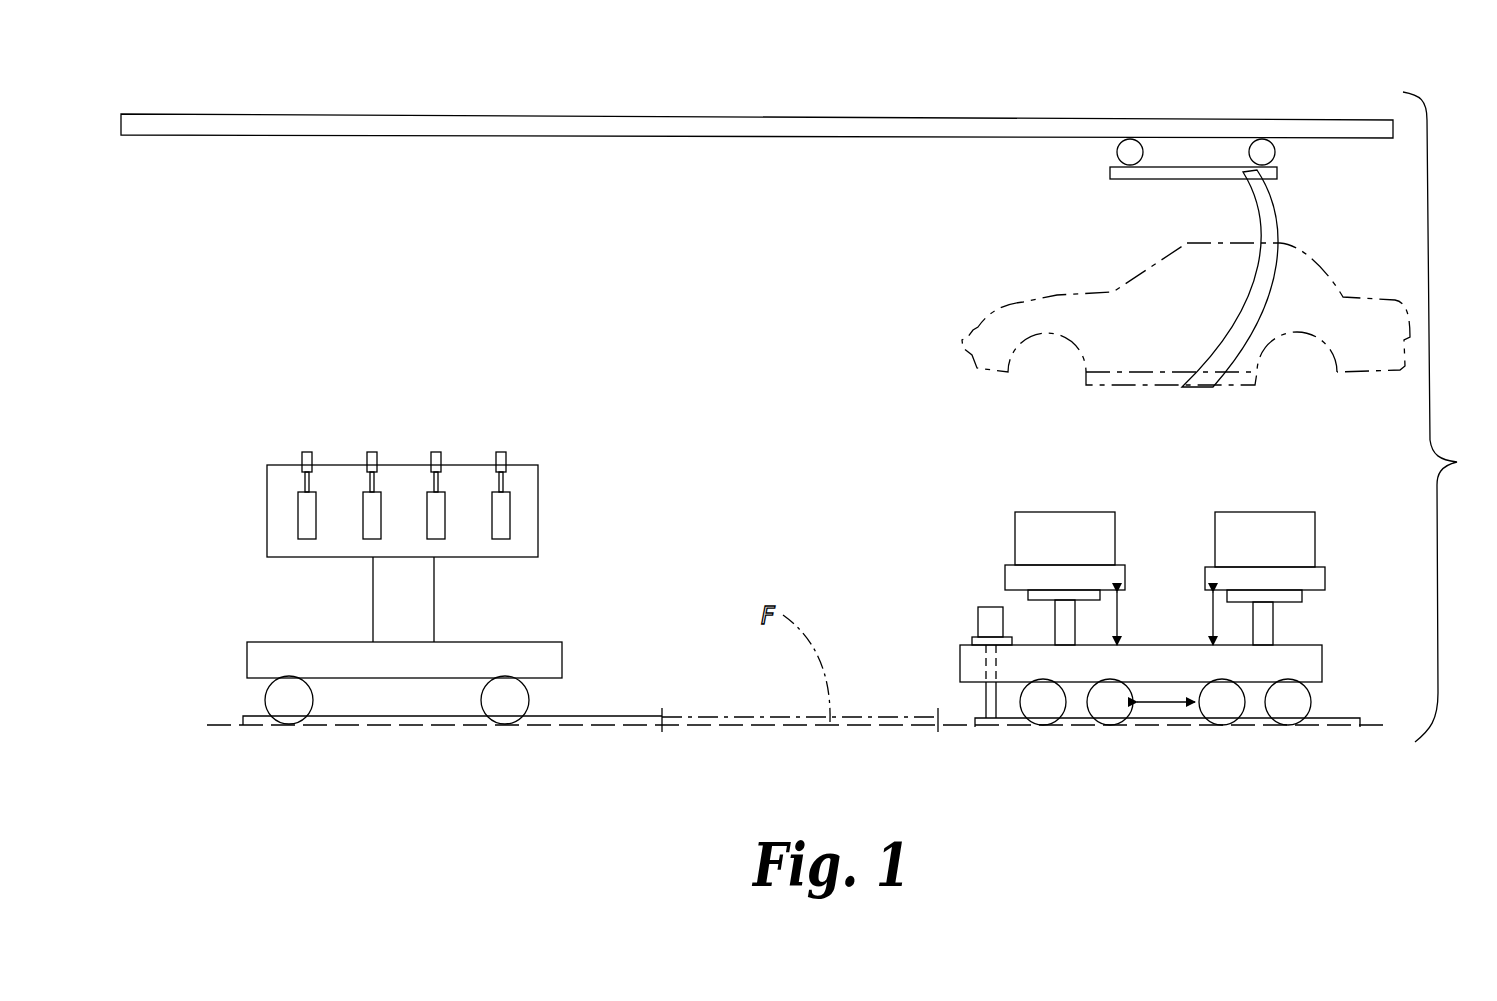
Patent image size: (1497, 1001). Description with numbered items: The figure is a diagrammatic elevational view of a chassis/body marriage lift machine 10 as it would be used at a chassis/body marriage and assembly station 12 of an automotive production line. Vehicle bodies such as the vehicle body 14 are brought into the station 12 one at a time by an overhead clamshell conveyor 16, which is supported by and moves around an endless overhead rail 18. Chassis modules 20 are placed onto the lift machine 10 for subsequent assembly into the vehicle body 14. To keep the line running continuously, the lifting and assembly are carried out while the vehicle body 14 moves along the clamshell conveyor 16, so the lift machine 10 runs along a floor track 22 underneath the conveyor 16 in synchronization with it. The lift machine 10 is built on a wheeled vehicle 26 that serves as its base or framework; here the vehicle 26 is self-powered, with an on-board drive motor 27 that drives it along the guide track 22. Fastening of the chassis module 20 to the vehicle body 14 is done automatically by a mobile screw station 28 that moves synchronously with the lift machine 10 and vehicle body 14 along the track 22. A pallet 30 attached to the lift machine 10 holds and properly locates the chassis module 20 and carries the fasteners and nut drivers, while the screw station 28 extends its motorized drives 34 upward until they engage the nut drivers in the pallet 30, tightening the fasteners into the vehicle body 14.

The chassis/body marriage lift machine 10 is at (1140, 593).
The chassis/body marriage and assembly station 12 is at (1380, 93).
The vehicle body 14 is at (1345, 297).
The overhead clamshell conveyor 16 is at (1267, 212).
The endless overhead rail 18 is at (1017, 118).
The chassis module 20 is at (1165, 539).
The floor track 22 is at (1352, 723).
The wheeled vehicle 26 is at (1302, 653).
The on-board drive motor 27 is at (988, 623).
The mobile screw station 28 is at (410, 585).
The pallet 30 is at (1005, 577).
The motorized drives 34 is at (305, 507).